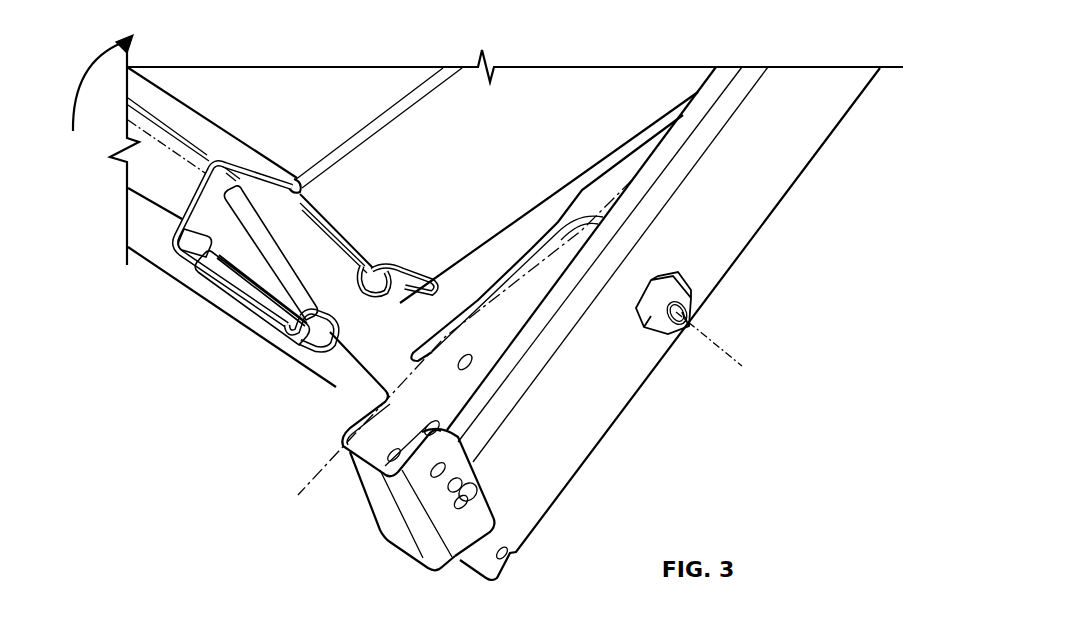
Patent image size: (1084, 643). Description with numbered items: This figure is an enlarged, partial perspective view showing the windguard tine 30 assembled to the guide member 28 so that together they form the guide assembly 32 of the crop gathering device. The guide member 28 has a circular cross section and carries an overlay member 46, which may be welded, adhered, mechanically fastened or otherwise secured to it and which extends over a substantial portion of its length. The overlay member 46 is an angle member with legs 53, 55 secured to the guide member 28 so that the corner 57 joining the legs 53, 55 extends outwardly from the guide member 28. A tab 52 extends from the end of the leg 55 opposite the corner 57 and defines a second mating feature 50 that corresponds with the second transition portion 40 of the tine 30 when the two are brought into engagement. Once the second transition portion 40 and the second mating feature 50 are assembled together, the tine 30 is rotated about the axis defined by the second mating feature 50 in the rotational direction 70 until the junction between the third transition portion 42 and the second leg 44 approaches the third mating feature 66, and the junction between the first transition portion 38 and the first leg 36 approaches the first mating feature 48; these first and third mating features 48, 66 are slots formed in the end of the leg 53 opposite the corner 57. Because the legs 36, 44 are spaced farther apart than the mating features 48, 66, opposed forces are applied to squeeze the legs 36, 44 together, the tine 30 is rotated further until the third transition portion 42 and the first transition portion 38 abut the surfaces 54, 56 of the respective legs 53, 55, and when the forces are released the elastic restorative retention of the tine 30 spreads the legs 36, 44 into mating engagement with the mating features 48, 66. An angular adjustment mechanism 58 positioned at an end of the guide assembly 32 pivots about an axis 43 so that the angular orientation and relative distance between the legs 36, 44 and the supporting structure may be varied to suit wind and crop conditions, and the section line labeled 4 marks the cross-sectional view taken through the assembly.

The rotational direction 70 is at (90, 73).
The corner 57 is at (143, 136).
The overlay member 46 is at (163, 102).
The surface 54 is at (200, 123).
The leg 53 is at (238, 150).
The second leg 44 is at (370, 120).
The guide assembly 32 is at (500, 92).
The tine 30 is at (547, 104).
The third transition portion 42 is at (198, 192).
The leg 55 is at (128, 188).
The surface 56 is at (134, 209).
The third mating feature 66 is at (298, 193).
The first transition portion 38 is at (387, 280).
The first mating feature 48 is at (427, 275).
The first leg 36 is at (533, 212).
The section line 4- 4 is at (640, 184).
The guide member 28 is at (164, 270).
The tab 52 is at (237, 300).
The second mating feature 50 is at (291, 341).
The second transition portion 40 is at (304, 343).
The axis 43 is at (708, 342).
The angular adjustment mechanism 58 is at (340, 437).